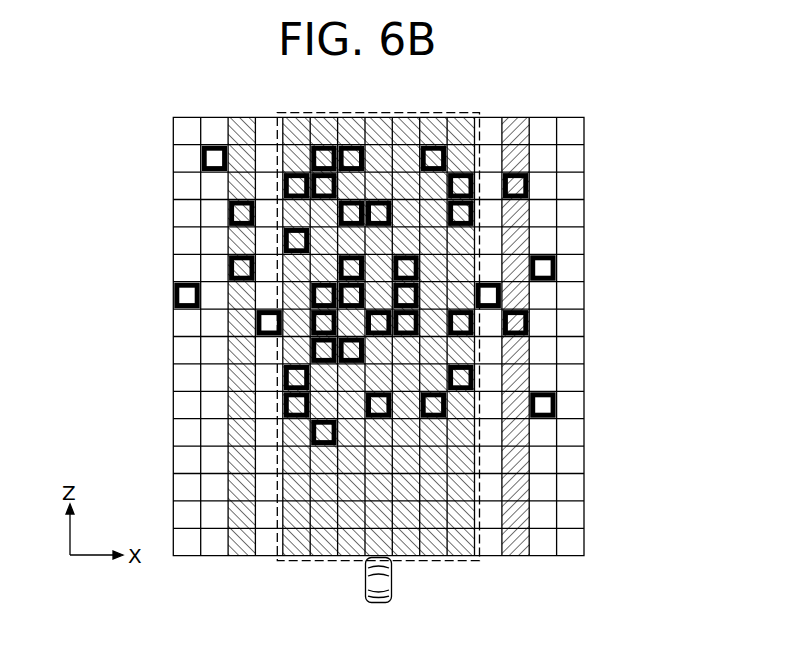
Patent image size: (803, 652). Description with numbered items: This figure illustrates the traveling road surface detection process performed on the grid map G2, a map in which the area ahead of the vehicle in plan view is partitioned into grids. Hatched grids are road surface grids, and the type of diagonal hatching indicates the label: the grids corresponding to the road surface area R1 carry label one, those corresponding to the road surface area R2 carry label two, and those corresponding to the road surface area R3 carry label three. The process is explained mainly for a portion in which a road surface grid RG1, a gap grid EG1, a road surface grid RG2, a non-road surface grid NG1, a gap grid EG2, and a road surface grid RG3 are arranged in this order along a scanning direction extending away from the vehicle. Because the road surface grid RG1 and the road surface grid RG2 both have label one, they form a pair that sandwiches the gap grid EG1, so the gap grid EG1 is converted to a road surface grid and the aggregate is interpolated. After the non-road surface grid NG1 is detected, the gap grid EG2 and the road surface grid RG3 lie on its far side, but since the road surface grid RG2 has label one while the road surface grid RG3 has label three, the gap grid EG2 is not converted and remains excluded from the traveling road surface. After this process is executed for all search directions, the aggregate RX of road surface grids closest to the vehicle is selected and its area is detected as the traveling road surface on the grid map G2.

The grid map G2 is at (567, 117).
The road surface area R1 is at (318, 557).
The road surface area R2 is at (242, 557).
The road surface area R3 is at (514, 557).
The aggregate of road surface grids RX is at (437, 563).
The road surface grid RG1 is at (465, 403).
The road surface grid RG2 is at (468, 348).
The road surface grid RG3 is at (553, 268).
The gap grid EG1 is at (465, 377).
The gap grid EG2 is at (485, 297).
The non-road surface grid NG1 is at (492, 324).